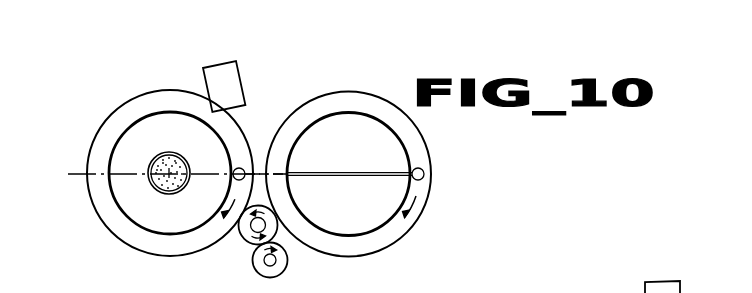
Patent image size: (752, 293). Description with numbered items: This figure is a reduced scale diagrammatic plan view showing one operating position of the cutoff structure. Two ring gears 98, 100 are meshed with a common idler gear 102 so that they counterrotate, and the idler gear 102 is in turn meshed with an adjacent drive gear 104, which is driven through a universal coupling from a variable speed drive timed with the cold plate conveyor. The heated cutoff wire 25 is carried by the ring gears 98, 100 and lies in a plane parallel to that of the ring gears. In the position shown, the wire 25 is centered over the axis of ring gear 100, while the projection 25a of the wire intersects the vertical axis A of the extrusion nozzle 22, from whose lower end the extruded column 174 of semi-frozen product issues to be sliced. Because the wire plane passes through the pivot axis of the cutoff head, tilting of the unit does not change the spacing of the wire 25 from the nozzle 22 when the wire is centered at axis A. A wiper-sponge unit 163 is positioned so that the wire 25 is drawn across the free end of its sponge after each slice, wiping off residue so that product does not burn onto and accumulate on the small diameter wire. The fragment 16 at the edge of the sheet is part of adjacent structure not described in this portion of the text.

The ring gear 98 is at (173, 250).
The ring gear 100 is at (365, 250).
The idler gear 102 is at (244, 239).
The drive gear 104 is at (258, 270).
The extrusion nozzle 22 is at (194, 149).
The extruded column 174 is at (183, 184).
The vertical axis A is at (169, 173).
The cutoff wire 25 is at (317, 175).
The projection of the wire 25a is at (78, 174).
The wiper-sponge unit 163 is at (248, 69).
The housing 16 is at (692, 290).